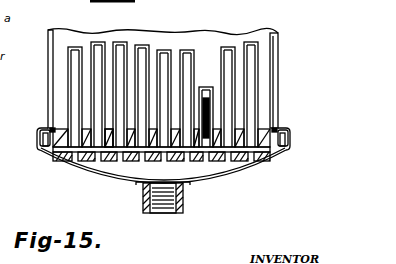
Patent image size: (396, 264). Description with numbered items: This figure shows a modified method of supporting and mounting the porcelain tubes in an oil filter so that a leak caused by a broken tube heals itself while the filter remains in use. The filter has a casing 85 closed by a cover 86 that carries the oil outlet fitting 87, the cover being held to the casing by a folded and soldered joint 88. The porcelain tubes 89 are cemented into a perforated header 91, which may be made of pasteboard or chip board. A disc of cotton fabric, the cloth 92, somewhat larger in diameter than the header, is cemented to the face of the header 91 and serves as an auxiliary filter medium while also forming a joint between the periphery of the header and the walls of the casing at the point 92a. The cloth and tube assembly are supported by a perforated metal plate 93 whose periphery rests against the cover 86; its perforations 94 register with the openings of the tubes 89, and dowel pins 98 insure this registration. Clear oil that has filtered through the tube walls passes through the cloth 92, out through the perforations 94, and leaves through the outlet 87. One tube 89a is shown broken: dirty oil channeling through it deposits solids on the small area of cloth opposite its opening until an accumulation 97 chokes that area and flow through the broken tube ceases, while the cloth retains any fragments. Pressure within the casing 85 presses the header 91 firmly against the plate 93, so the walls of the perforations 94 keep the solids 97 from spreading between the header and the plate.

The casing 85 is at (277, 55).
The cover 86 is at (250, 178).
The oil outlet fitting 87 is at (145, 198).
The folded and soldered joint 88 is at (38, 140).
The porcelain tubes 89 is at (100, 42).
The broken porcelain tube 89a is at (207, 87).
The perforated header 91 is at (85, 149).
The cloth disc 92 is at (110, 147).
The joint between header periphery and casing walls 92a is at (52, 130).
The perforated metal plate 93 is at (122, 152).
The perforations 94 is at (164, 158).
The accumulation of solids 97 is at (207, 118).
The dowel pins 98 is at (42, 160).